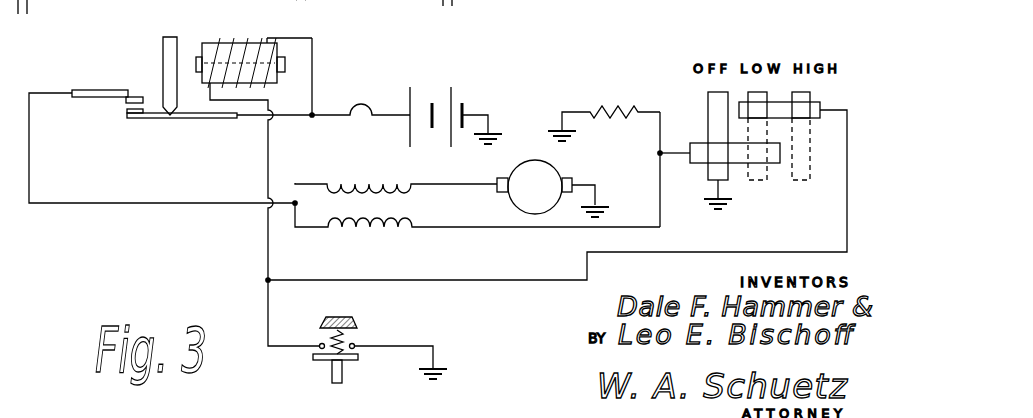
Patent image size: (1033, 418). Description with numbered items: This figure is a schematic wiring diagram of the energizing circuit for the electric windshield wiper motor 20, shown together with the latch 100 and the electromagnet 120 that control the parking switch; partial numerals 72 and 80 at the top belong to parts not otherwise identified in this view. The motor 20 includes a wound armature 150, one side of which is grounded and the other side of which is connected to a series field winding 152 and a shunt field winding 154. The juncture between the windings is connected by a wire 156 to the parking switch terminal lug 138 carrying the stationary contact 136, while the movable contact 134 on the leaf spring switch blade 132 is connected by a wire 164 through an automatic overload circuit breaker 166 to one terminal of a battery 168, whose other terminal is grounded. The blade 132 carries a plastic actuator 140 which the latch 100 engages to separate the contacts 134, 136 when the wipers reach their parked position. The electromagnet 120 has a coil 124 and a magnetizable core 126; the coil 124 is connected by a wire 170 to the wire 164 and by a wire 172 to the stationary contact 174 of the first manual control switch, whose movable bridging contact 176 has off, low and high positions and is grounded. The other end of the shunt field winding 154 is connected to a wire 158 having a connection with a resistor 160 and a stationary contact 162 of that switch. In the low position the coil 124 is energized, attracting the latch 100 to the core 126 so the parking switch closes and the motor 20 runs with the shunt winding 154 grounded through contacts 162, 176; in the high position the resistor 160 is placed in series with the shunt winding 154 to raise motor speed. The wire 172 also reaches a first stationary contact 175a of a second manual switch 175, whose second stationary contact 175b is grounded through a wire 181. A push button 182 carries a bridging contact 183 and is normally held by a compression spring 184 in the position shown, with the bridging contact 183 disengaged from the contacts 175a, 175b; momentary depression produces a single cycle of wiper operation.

The motor 20 is at (562, 163).
The housing 72 is at (108, 12).
The shaft 80 is at (138, 11).
The latch 100 is at (163, 50).
The electromagnet 120 is at (268, 42).
The coil 124 is at (268, 83).
The magnetizable core 126 is at (285, 63).
The leaf spring switch blade 132 is at (153, 118).
The contact 134 is at (126, 113).
The stationary contact 136 is at (144, 96).
The terminal lug 138 is at (100, 97).
The actuator 140 is at (168, 119).
The wound armature 150 is at (517, 169).
The series field winding 152 is at (371, 182).
The shunt field winding 154 is at (393, 229).
The wire 156 is at (103, 204).
The wire 158 is at (628, 227).
The resistor 160 is at (618, 106).
The stationary contact 162 is at (780, 162).
The wire 164 is at (294, 116).
The automatic overload circuit breaker 166 is at (376, 108).
The battery 168 is at (451, 89).
The wire 170 is at (313, 80).
The wire 172 is at (268, 256).
The stationary switch contact 174 is at (815, 108).
The second manual switch 175 is at (322, 364).
The first stationary contact 175a is at (320, 344).
The second stationary contact 175b is at (355, 345).
The movable bridging contact 176 is at (713, 105).
The wire 181 is at (437, 345).
The push button 182 is at (342, 380).
The bridging contact 183 is at (352, 358).
The compression spring 184 is at (353, 338).